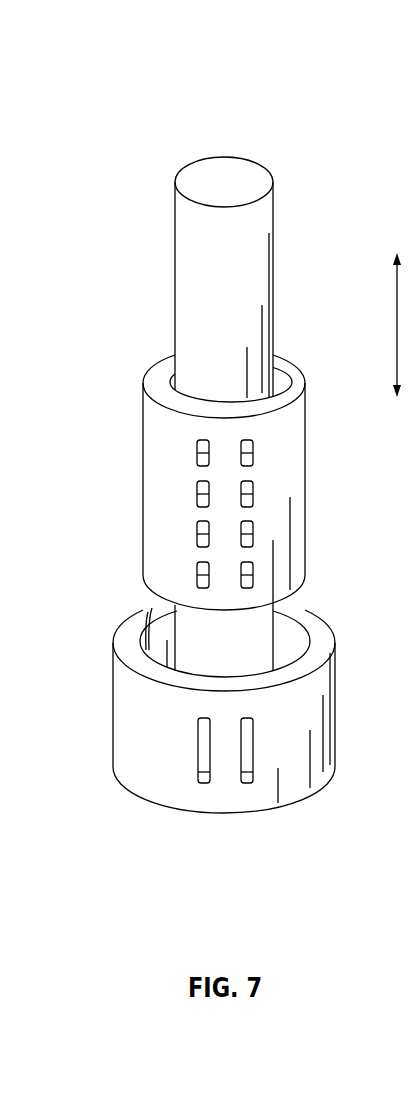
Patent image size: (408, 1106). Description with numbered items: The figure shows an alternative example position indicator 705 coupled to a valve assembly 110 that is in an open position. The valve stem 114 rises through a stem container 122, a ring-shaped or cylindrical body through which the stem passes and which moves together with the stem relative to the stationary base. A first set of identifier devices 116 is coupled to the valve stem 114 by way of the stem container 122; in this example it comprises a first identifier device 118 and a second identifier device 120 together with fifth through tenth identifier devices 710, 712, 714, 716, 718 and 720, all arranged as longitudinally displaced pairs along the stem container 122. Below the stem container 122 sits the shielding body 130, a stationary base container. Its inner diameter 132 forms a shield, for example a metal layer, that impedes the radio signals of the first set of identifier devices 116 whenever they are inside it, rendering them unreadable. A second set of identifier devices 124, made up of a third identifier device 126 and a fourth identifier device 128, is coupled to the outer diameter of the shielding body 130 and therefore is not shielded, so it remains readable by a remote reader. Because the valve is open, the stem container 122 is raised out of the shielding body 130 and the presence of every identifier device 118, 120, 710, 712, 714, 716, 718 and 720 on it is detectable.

The valve assembly 110 is at (146, 104).
The valve stem 114 is at (260, 249).
The first set of identifier devices 116 is at (160, 453).
The first identifier device 118 is at (197, 445).
The second identifier device 120 is at (253, 458).
The stem container 122 is at (293, 377).
The second set of identifier devices 124 is at (226, 806).
The third identifier device 126 is at (203, 787).
The fourth identifier device 128 is at (243, 787).
The shielding body 130 is at (318, 627).
The inner diameter 132 is at (155, 610).
The position indicator 705 is at (87, 336).
The fifth identifier device 710 is at (197, 497).
The sixth identifier device 712 is at (253, 497).
The seventh identifier device 714 is at (197, 538).
The eighth identifier device 716 is at (253, 538).
The ninth identifier device 718 is at (197, 580).
The tenth identifier device 720 is at (253, 580).